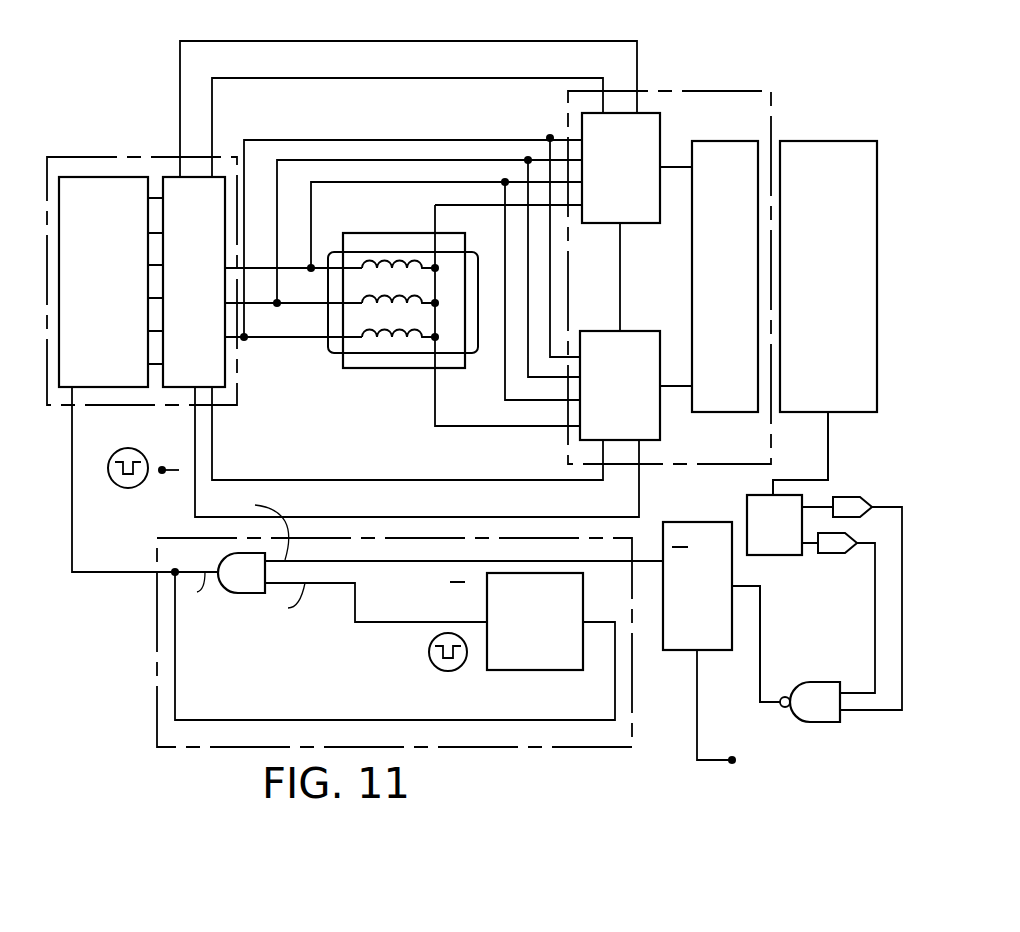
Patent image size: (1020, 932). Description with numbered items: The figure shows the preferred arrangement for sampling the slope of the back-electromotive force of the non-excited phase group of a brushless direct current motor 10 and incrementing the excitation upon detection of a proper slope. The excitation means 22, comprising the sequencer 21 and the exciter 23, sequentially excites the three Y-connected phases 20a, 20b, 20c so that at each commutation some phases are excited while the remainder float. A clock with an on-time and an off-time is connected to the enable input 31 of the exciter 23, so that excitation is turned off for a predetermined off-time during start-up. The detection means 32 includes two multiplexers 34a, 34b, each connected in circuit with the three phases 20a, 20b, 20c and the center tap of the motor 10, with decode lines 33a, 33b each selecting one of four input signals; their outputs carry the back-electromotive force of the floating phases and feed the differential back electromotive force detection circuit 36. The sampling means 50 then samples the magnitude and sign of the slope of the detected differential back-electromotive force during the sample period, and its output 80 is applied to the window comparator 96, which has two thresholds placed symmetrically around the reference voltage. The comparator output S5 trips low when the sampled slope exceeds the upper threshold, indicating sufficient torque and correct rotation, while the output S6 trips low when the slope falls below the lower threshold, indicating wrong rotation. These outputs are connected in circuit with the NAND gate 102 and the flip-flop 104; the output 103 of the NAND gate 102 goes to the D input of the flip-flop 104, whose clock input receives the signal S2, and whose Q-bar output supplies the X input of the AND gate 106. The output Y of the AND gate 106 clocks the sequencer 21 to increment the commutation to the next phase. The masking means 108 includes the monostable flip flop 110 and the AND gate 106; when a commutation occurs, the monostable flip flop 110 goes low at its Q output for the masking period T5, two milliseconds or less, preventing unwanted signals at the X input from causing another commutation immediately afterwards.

The brushless direct current motor 10 is at (418, 233).
The phase 20a is at (385, 255).
The phase 20b is at (383, 297).
The phase 20c is at (383, 340).
The sequencer 21 is at (95, 177).
The excitation means 22 is at (75, 157).
The exciter 23 is at (215, 177).
The enable input 31 is at (178, 443).
The detection means 32 is at (670, 91).
The decode line 33a is at (440, 78).
The decode line 33b is at (468, 517).
The multiplexer 34a is at (633, 223).
The multiplexer 34b is at (643, 331).
The differential back electromotive force detection circuit 36 is at (712, 141).
The sampling means 50 is at (826, 141).
The output 80 is at (828, 452).
The window comparator 96 is at (747, 507).
The NAND gate 102 is at (815, 722).
The output 103 is at (760, 663).
The flip-flop 104 is at (677, 650).
The AND gate 106 is at (252, 593).
The masking means 108 is at (560, 747).
The monostable flip flop 110 is at (560, 670).
The signal S2 is at (754, 764).
The output of comparator S5 is at (847, 497).
The output of comparator S6 is at (850, 553).
The masking period time T5 is at (448, 671).